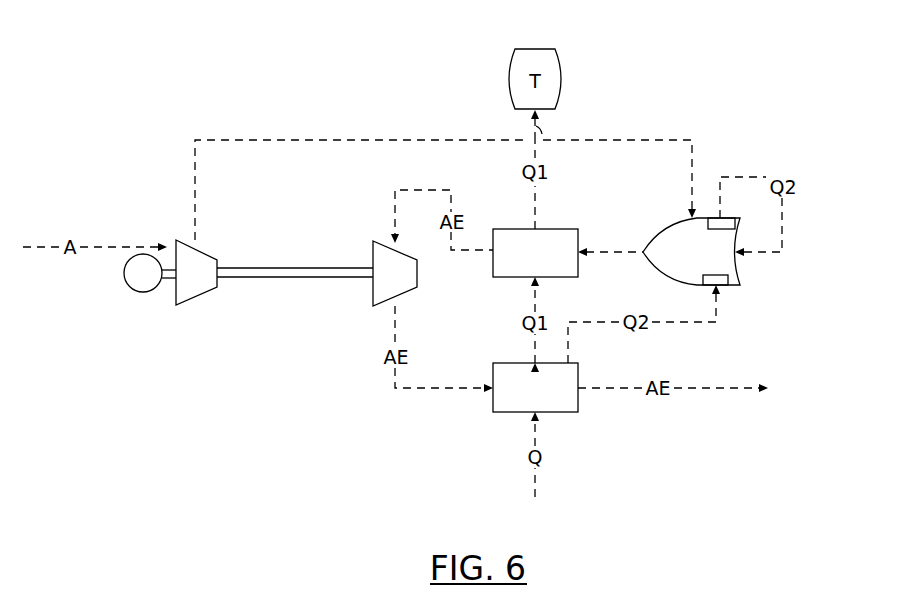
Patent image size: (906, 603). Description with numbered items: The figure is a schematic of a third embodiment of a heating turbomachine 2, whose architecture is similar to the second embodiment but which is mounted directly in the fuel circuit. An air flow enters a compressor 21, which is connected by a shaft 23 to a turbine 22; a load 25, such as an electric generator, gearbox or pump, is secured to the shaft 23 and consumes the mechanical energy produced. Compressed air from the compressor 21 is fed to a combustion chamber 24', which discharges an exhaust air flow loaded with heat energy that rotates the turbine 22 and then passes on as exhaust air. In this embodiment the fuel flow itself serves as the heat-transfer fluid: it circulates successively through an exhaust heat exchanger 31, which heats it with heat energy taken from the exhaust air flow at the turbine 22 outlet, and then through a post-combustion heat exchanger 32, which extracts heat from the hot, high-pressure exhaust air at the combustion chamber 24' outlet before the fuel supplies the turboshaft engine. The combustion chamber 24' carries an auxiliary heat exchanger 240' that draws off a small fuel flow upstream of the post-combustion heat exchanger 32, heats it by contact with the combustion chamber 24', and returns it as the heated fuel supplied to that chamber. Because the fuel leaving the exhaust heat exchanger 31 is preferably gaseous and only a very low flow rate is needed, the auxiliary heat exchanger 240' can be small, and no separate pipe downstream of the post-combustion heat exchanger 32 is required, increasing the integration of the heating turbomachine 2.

The heating turbomachine 2 is at (158, 192).
The compressor 21 is at (207, 285).
The turbine 22 is at (384, 285).
The shaft 23 is at (300, 279).
The load 25 is at (143, 292).
The combustion chamber 24' is at (691, 251).
The auxiliary heat exchanger 240' is at (734, 165).
The exhaust heat exchanger 31 is at (524, 398).
The post-combustion heat exchanger 32 is at (524, 263).